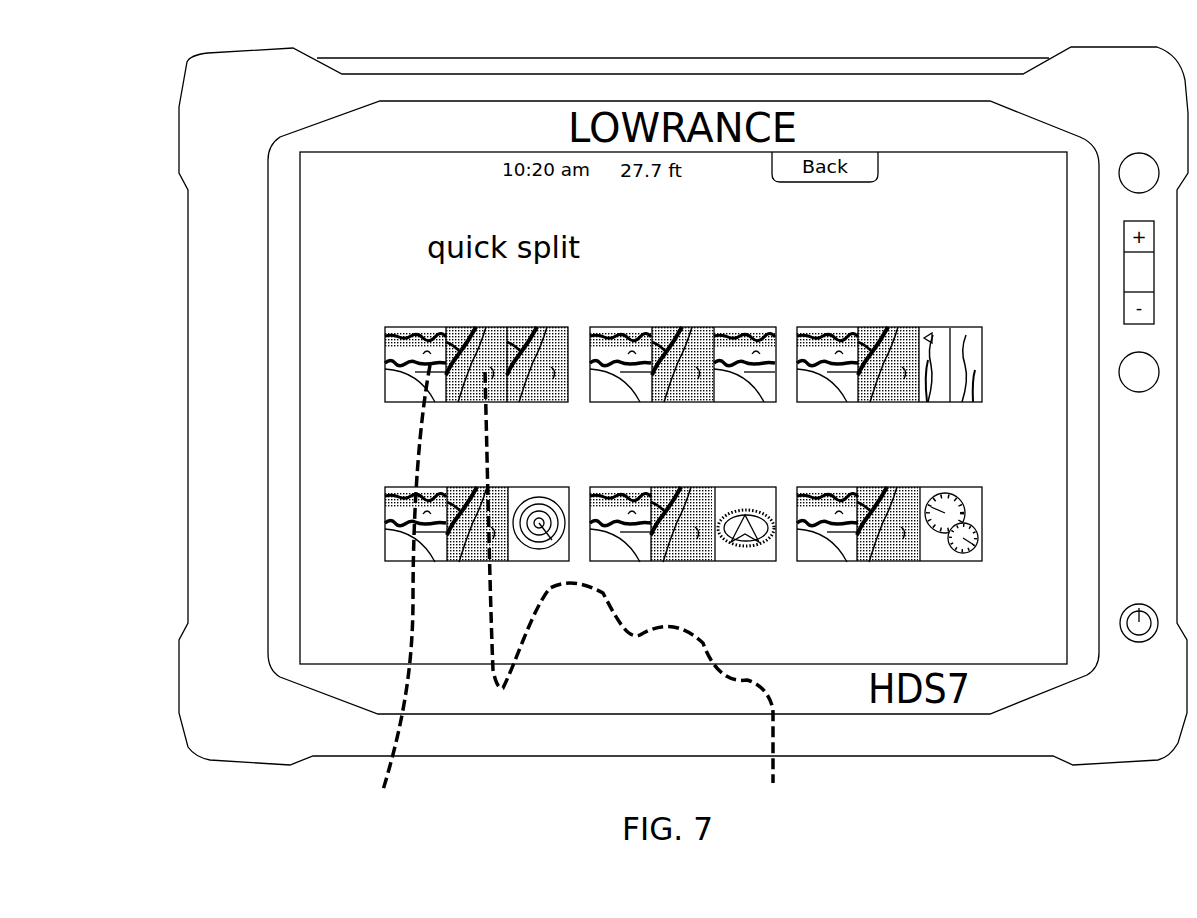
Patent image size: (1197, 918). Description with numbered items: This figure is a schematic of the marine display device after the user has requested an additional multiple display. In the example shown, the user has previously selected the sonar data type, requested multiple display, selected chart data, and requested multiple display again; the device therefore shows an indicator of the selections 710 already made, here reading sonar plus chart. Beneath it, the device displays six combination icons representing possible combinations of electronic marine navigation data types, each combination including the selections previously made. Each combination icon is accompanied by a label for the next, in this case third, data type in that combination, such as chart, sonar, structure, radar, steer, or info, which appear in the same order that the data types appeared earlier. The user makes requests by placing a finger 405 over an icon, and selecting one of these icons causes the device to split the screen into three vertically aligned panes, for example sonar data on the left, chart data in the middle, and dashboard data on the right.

The finger 405 is at (388, 363).
The indicator of the selections 710 is at (660, 230).